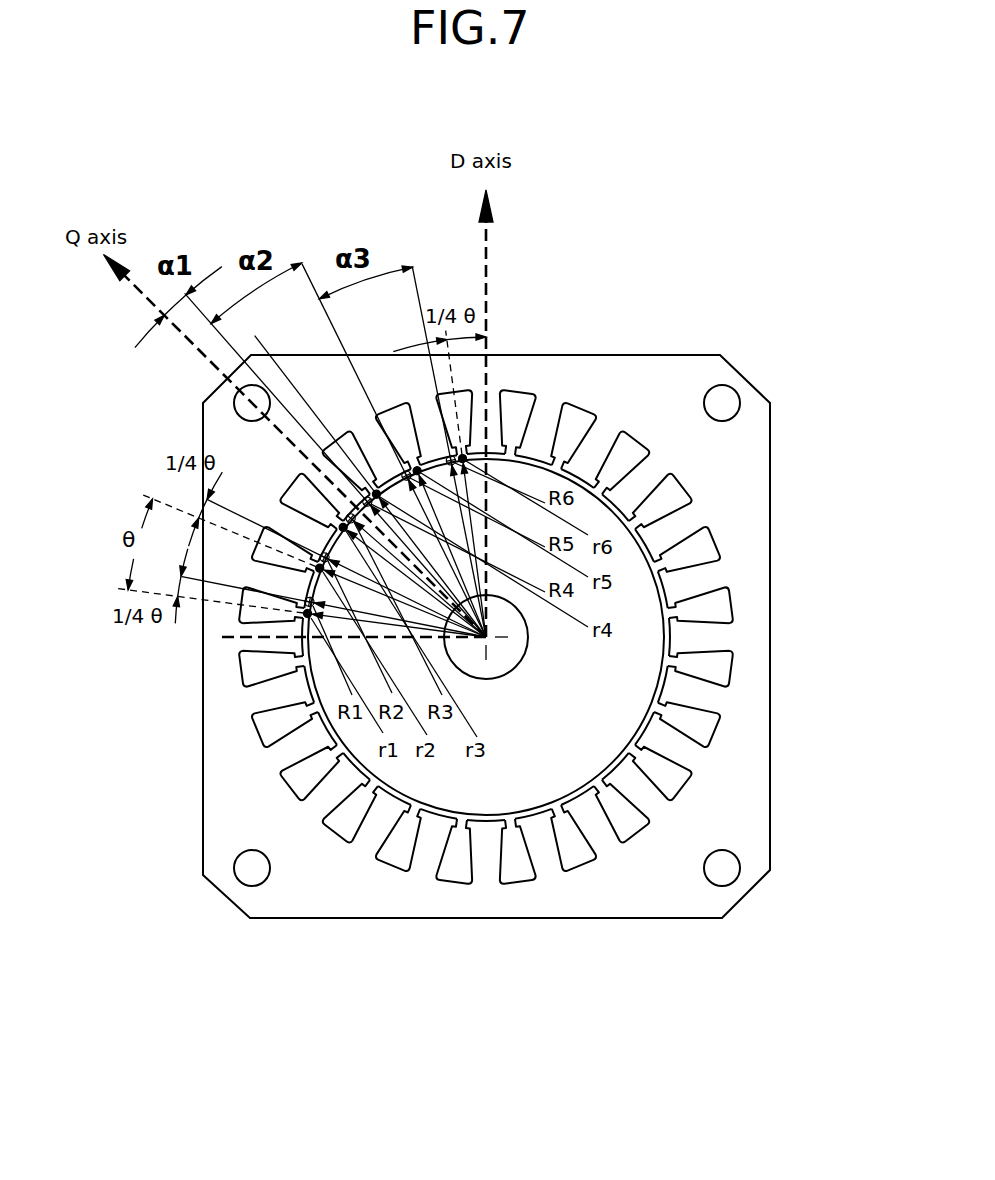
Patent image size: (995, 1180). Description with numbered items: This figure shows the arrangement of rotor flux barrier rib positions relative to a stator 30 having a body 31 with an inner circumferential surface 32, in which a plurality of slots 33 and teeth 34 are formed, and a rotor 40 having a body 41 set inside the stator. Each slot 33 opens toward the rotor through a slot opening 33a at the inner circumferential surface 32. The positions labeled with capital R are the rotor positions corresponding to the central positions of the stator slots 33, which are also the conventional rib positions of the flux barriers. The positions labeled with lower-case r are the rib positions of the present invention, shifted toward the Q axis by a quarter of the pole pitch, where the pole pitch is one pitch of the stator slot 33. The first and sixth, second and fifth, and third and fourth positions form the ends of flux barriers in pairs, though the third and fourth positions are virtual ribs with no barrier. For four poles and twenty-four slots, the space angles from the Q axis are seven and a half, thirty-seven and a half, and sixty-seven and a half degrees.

The stator 30 is at (762, 418).
The body 31 is at (612, 380).
The inner circumferential surface 32 is at (652, 816).
The slot 33 is at (707, 720).
The slot opening 33a is at (660, 710).
The tooth 34 is at (683, 750).
The rotor 40 is at (545, 768).
The body 41 is at (492, 775).